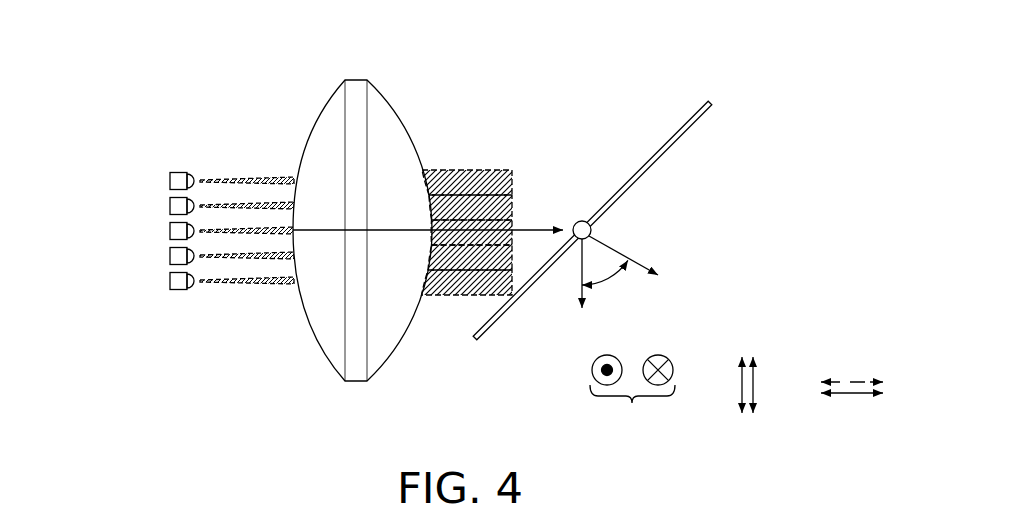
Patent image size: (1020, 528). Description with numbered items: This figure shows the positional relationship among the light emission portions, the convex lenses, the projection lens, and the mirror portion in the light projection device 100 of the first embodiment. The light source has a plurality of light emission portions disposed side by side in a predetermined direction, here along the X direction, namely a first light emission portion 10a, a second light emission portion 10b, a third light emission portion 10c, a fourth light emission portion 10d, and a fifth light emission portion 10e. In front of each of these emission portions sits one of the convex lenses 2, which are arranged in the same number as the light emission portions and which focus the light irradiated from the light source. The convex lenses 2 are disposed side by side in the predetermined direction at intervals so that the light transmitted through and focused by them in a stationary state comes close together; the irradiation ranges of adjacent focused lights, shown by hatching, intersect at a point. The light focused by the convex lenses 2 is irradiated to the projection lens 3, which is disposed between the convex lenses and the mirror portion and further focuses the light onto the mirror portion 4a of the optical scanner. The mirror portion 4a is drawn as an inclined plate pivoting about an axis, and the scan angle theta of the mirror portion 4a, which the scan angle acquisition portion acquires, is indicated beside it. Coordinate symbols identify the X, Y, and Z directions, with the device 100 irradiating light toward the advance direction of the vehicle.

The light projection device 100 is at (154, 42).
The convex lenses 2 is at (204, 159).
The first light emission portion 10a is at (157, 185).
The second light emission portion 10b is at (157, 210).
The third light emission portion 10c is at (157, 235).
The fourth light emission portion 10d is at (157, 260).
The fifth light emission portion 10e is at (157, 285).
The projection lens 3 is at (316, 100).
The mirror portion 4a is at (699, 140).